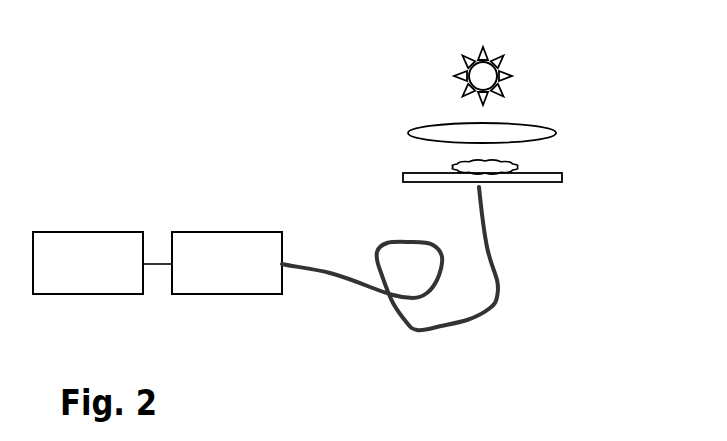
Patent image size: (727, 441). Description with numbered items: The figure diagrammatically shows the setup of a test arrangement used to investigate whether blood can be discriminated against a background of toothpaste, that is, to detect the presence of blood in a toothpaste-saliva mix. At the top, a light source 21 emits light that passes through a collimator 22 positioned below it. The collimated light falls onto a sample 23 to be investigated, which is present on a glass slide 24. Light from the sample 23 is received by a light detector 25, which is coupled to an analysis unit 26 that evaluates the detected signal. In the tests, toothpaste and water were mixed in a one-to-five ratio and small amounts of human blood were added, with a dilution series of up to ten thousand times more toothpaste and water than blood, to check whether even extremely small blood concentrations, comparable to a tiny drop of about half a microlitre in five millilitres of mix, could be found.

The light source 21 is at (488, 77).
The collimator 22 is at (525, 132).
The sample 23 is at (518, 165).
The glass slide 24 is at (542, 178).
The light detector 25 is at (225, 240).
The analysis unit 26 is at (85, 243).